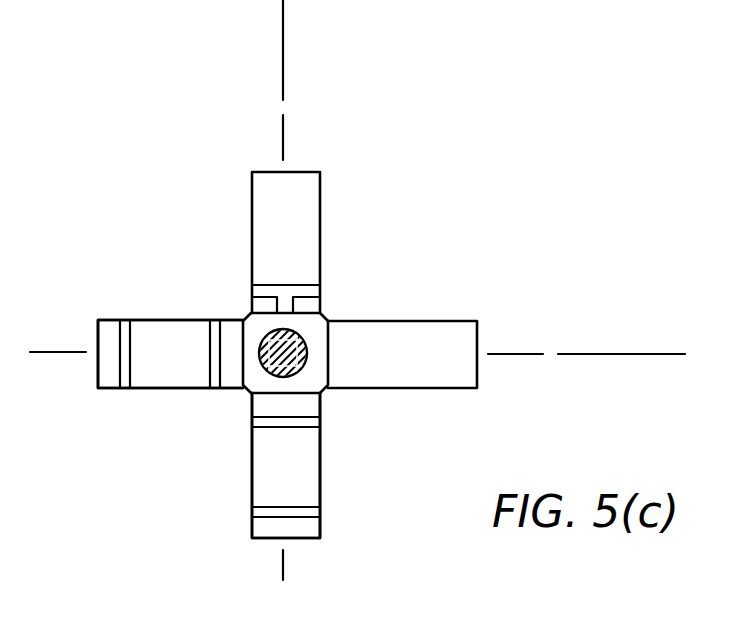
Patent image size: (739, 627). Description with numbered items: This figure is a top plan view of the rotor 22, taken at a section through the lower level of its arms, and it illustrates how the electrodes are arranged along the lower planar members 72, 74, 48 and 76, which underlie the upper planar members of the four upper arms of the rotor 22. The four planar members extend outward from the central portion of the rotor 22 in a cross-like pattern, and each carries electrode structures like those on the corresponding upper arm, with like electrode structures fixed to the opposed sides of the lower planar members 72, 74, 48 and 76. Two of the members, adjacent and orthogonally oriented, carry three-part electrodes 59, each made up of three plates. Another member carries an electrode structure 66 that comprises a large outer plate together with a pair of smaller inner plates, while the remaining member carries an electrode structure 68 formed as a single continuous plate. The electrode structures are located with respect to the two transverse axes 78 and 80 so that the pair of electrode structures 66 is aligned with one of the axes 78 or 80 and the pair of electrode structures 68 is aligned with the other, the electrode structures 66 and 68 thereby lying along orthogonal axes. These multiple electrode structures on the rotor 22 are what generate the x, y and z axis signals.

The rotor 22 is at (148, 178).
The lower planar member 48 is at (407, 320).
The three-part electrodes 59 is at (238, 395).
The electrode structure 66 is at (240, 175).
The electrode structure 68 is at (472, 395).
The lower planar member 72 is at (172, 318).
The lower planar member 74 is at (326, 240).
The lower planar member 76 is at (324, 480).
The transverse axis 78 is at (285, 82).
The transverse axis 80 is at (577, 353).